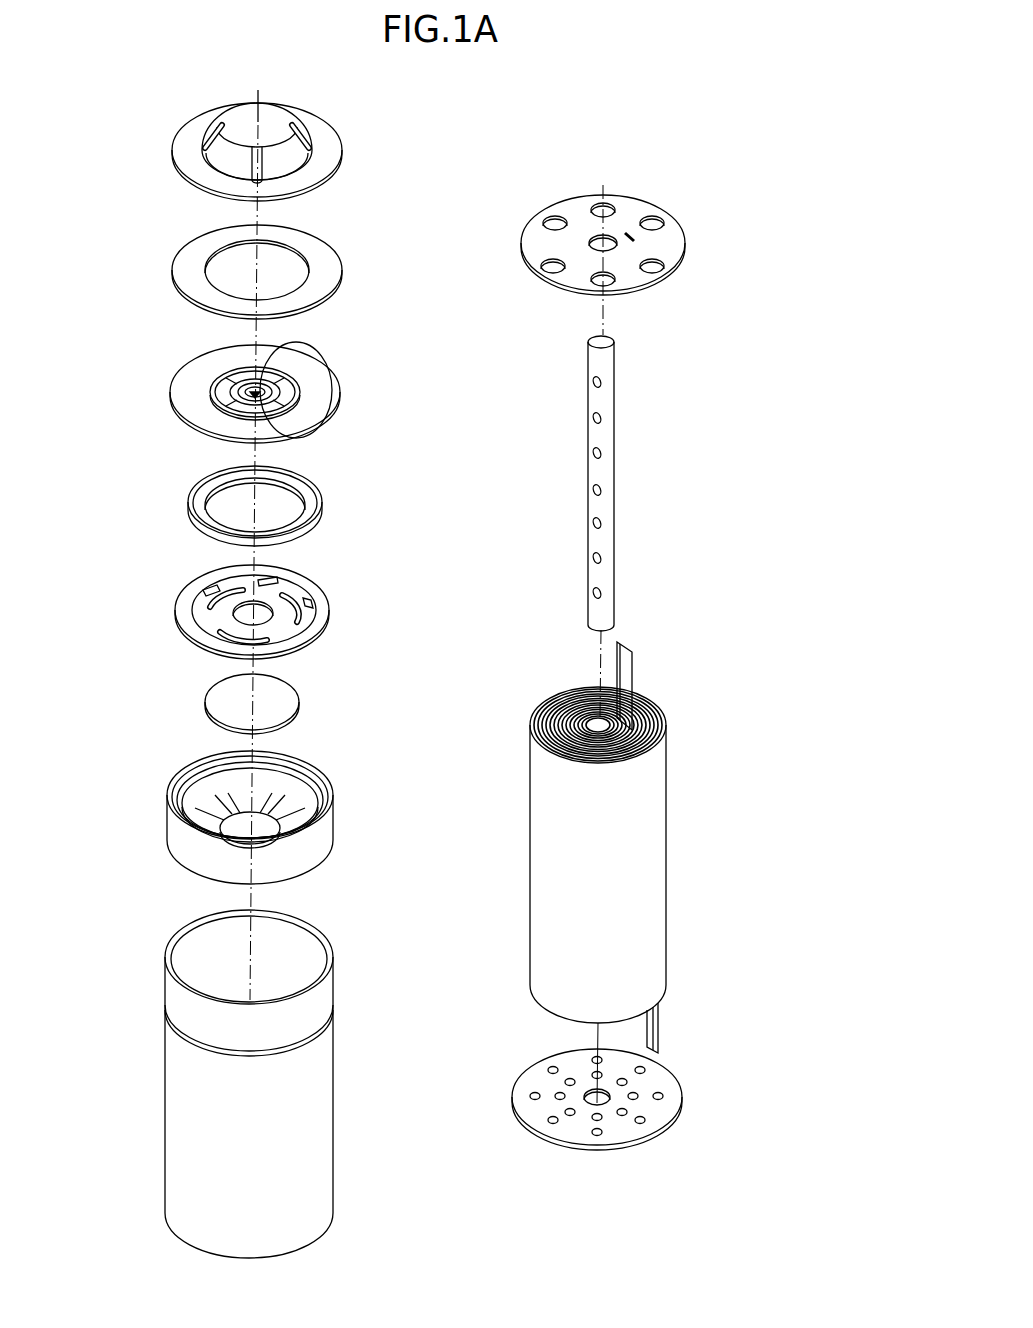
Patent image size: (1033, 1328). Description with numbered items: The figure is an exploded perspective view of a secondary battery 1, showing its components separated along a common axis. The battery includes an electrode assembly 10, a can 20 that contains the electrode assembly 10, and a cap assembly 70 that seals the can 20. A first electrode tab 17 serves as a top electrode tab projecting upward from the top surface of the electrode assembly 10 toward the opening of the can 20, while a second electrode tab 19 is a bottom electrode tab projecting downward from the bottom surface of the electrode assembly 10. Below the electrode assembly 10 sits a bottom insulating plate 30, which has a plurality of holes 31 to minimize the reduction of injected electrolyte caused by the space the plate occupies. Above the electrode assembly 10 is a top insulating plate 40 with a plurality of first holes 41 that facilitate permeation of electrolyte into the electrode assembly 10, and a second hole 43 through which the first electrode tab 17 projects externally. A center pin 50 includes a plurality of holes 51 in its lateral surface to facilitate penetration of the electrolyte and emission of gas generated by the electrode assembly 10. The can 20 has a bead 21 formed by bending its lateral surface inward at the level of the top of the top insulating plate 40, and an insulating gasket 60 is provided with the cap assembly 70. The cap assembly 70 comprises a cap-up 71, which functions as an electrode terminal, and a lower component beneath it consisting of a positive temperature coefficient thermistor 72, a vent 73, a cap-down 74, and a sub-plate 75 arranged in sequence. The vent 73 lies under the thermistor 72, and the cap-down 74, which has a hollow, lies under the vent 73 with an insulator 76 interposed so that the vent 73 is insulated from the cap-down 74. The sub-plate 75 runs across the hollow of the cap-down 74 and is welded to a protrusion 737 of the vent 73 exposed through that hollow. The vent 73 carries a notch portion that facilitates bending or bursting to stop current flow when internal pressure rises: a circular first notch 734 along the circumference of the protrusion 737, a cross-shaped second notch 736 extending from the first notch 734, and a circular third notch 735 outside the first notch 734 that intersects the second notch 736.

The secondary battery 1 is at (122, 162).
The electrode assembly 10 is at (667, 863).
The first electrode tab 17 is at (623, 665).
The second electrode tab 19 is at (658, 1040).
The can 20 is at (327, 1108).
The bead 21 is at (327, 1020).
The bottom insulating plate 30 is at (647, 1082).
The holes 31 is at (643, 1120).
The top insulating plate 40 is at (677, 240).
The first holes 41 is at (652, 222).
The second hole 43 is at (630, 230).
The center pin 50 is at (607, 473).
The holes 51 is at (597, 418).
The insulating gasket 60 is at (332, 825).
The cap assembly 70 is at (418, 150).
The cap-up 71 is at (327, 135).
The positive temperature coefficient (PTC) thermistor 72 is at (330, 257).
The vent 73 is at (325, 383).
The first notch 734 is at (265, 417).
The third notch 735 is at (283, 368).
The second notch 736 is at (267, 373).
The protrusion 737 is at (260, 410).
The cap-down 74 is at (320, 595).
The sub-plate 75 is at (290, 690).
The insulator 76 is at (317, 492).